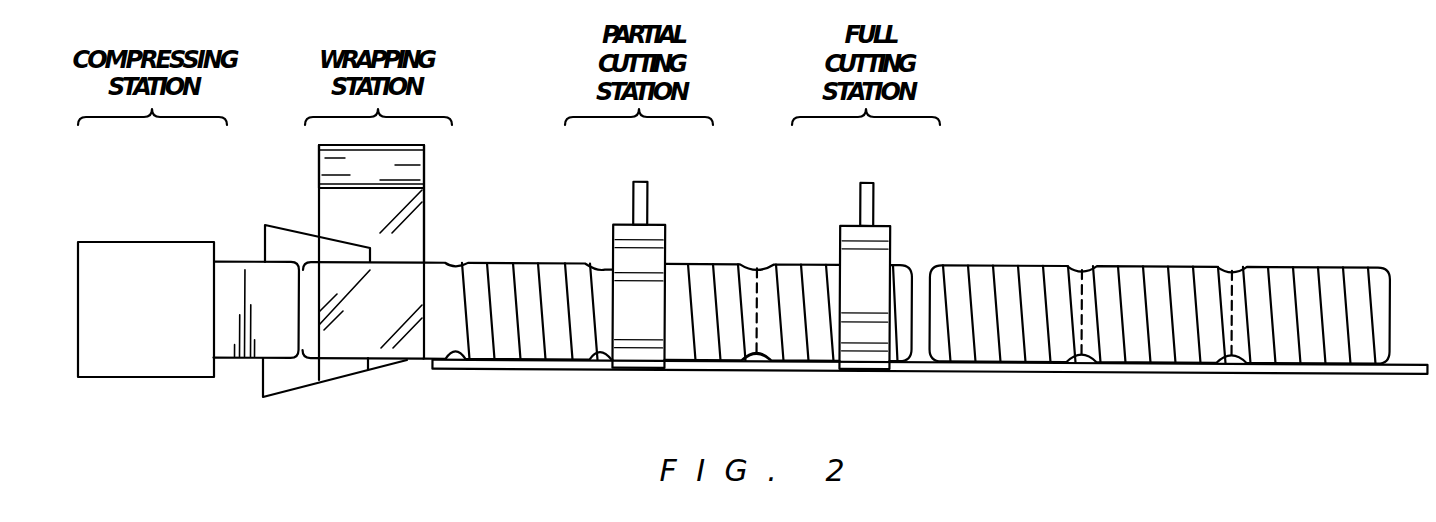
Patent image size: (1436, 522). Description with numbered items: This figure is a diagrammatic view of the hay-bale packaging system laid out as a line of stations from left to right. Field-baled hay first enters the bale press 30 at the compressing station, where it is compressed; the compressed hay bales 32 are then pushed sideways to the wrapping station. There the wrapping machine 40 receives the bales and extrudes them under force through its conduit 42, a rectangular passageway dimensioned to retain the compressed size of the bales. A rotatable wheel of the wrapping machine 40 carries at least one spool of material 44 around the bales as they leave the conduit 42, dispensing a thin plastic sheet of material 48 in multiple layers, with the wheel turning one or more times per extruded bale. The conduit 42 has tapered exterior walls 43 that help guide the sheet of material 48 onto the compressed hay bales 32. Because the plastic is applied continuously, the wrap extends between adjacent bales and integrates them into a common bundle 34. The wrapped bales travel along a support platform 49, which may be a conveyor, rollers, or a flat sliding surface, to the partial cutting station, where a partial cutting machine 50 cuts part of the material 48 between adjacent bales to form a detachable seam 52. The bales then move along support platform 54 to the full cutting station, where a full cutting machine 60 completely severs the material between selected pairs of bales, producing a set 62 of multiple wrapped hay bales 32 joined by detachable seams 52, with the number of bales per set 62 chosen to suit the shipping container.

The bale press 30 is at (137, 379).
The compressed hay bales 32 is at (558, 338).
The common bundle 34 is at (541, 247).
The wrapping machine 40 is at (387, 226).
The conduit 42 is at (277, 378).
The tapered exterior walls 43 is at (300, 389).
The spool of material 44 is at (424, 170).
The sheet of material 48 is at (333, 215).
The support platform 49 is at (582, 364).
The partial cutting machine 50 is at (672, 179).
The detachable seam 52 is at (1235, 313).
The support platform 54 is at (733, 362).
The full cutting machine 60 is at (896, 179).
The set of wrapped hay bales 62 is at (1184, 262).